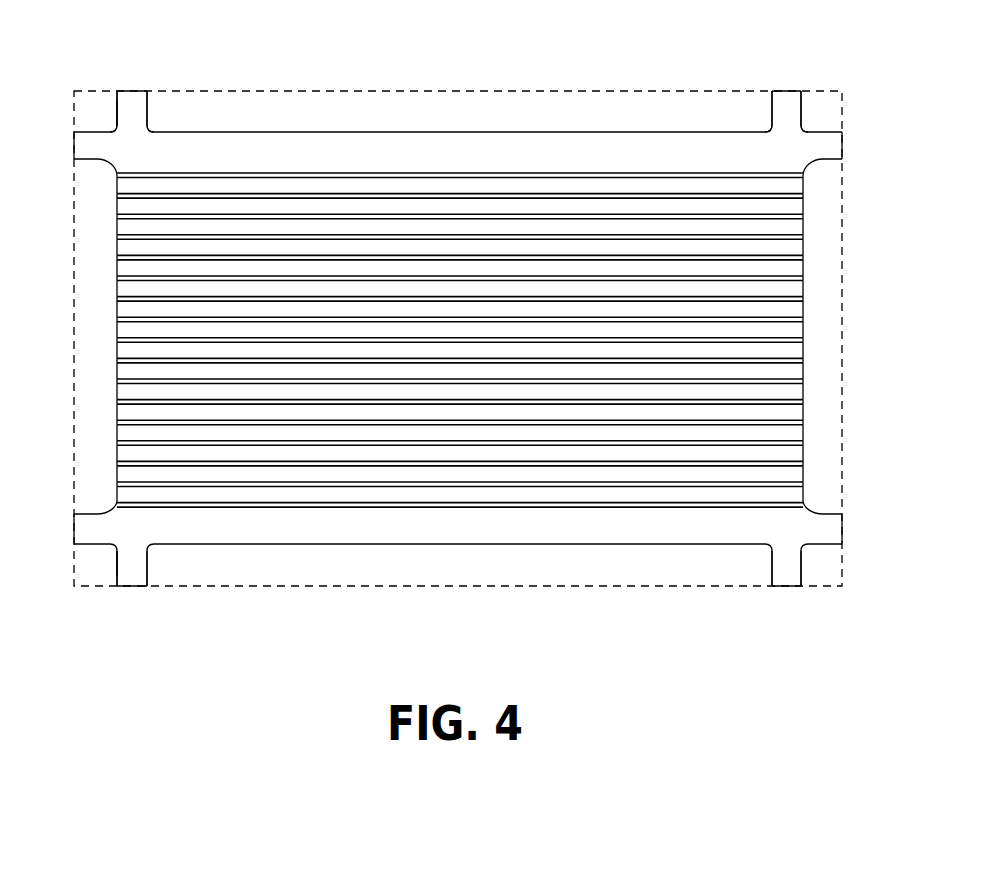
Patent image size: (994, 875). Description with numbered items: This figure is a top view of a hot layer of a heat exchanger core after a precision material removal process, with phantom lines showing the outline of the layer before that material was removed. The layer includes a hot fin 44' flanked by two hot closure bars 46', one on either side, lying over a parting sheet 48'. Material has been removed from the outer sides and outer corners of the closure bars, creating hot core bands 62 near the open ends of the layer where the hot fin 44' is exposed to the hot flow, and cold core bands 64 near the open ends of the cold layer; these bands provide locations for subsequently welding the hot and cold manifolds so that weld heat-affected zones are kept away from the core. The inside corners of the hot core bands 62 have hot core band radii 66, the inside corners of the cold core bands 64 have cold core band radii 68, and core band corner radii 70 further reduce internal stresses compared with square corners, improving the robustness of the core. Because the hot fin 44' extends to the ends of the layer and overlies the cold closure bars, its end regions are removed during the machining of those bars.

The hot fin 44' is at (460, 279).
The hot closure bars 46' is at (458, 335).
The parting sheet 48' is at (459, 342).
The hot core bands 62 is at (88, 149).
The cold core bands 64 is at (131, 103).
The hot core band radii 66 is at (106, 165).
The cold core band radii 68 is at (152, 128).
The core band corner radii 70 is at (112, 127).